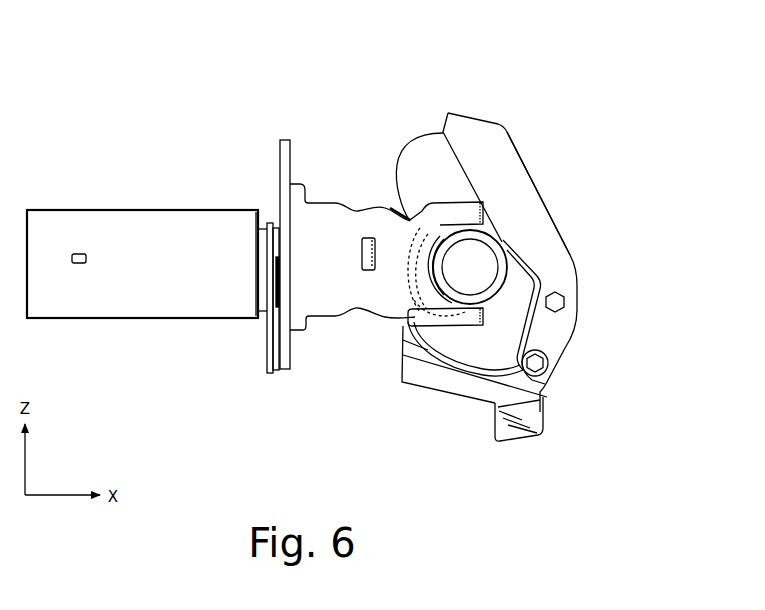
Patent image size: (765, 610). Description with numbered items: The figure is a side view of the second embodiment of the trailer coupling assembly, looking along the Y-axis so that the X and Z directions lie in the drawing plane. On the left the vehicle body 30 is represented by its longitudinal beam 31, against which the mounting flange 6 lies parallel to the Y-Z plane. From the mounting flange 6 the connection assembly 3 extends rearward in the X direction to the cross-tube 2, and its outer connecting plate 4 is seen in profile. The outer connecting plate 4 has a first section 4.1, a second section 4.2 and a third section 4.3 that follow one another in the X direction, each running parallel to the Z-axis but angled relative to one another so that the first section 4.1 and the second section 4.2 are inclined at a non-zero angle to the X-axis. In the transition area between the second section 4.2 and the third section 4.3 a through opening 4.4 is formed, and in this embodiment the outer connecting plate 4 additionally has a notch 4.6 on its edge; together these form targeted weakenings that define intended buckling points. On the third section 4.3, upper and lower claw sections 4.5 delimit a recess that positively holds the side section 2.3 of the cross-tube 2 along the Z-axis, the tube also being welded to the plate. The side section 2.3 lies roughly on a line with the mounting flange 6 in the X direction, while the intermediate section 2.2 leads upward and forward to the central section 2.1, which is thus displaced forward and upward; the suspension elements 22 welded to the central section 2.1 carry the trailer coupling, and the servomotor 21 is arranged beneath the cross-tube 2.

The cross-tube 2 is at (515, 258).
The central section 2.1 is at (420, 118).
The intermediate section 2.2 is at (542, 246).
The side section 2.3 is at (514, 283).
The connection assembly 3 is at (300, 186).
The outer connecting plate 4 is at (410, 237).
The first section 4.1 is at (310, 190).
The second section 4.2 is at (355, 190).
The third section 4.3 is at (410, 385).
The through opening 4.4 is at (356, 251).
The claw sections 4.5 is at (498, 215).
The notch 4.6 is at (410, 212).
The mounting flange 6 is at (283, 373).
The servomotor 21 is at (483, 387).
The suspension elements 22 is at (560, 208).
The vehicle body 30 is at (147, 223).
The longitudinal beam 31 is at (143, 210).